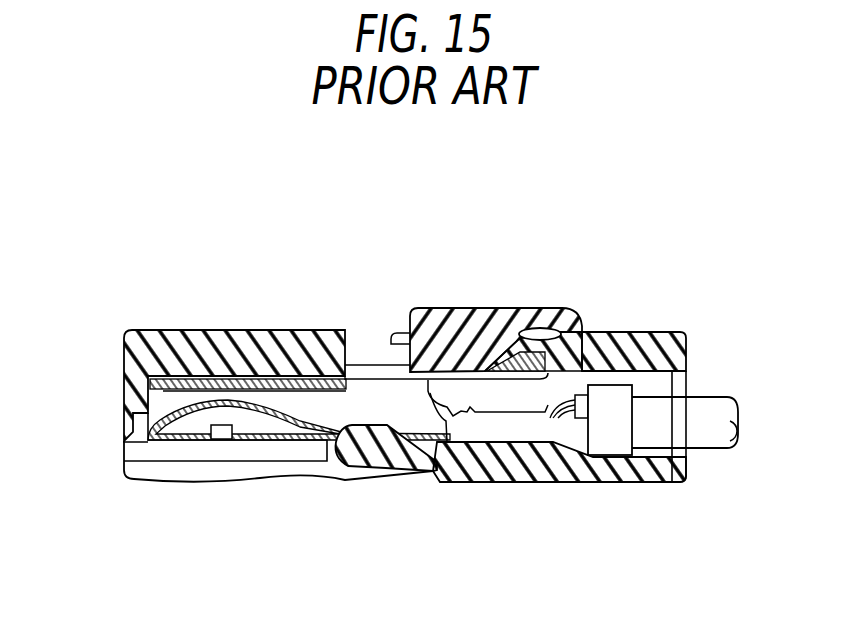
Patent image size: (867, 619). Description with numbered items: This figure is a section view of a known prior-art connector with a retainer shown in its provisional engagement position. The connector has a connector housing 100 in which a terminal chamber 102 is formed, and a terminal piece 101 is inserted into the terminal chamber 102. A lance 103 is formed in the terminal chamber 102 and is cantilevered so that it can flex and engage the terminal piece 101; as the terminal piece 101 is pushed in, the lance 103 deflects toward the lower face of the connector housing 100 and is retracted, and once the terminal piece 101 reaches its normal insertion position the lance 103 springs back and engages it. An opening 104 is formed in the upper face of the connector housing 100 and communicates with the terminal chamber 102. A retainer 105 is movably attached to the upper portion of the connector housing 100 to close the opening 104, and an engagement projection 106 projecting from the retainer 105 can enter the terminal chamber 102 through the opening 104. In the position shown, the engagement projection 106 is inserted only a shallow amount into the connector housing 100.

The connector housing 100 is at (147, 330).
The terminal piece 101 is at (503, 440).
The terminal chamber 102 is at (256, 392).
The lance 103 is at (383, 455).
The opening 104 is at (383, 372).
The retainer 105 is at (418, 345).
The engagement projection 106 is at (449, 372).